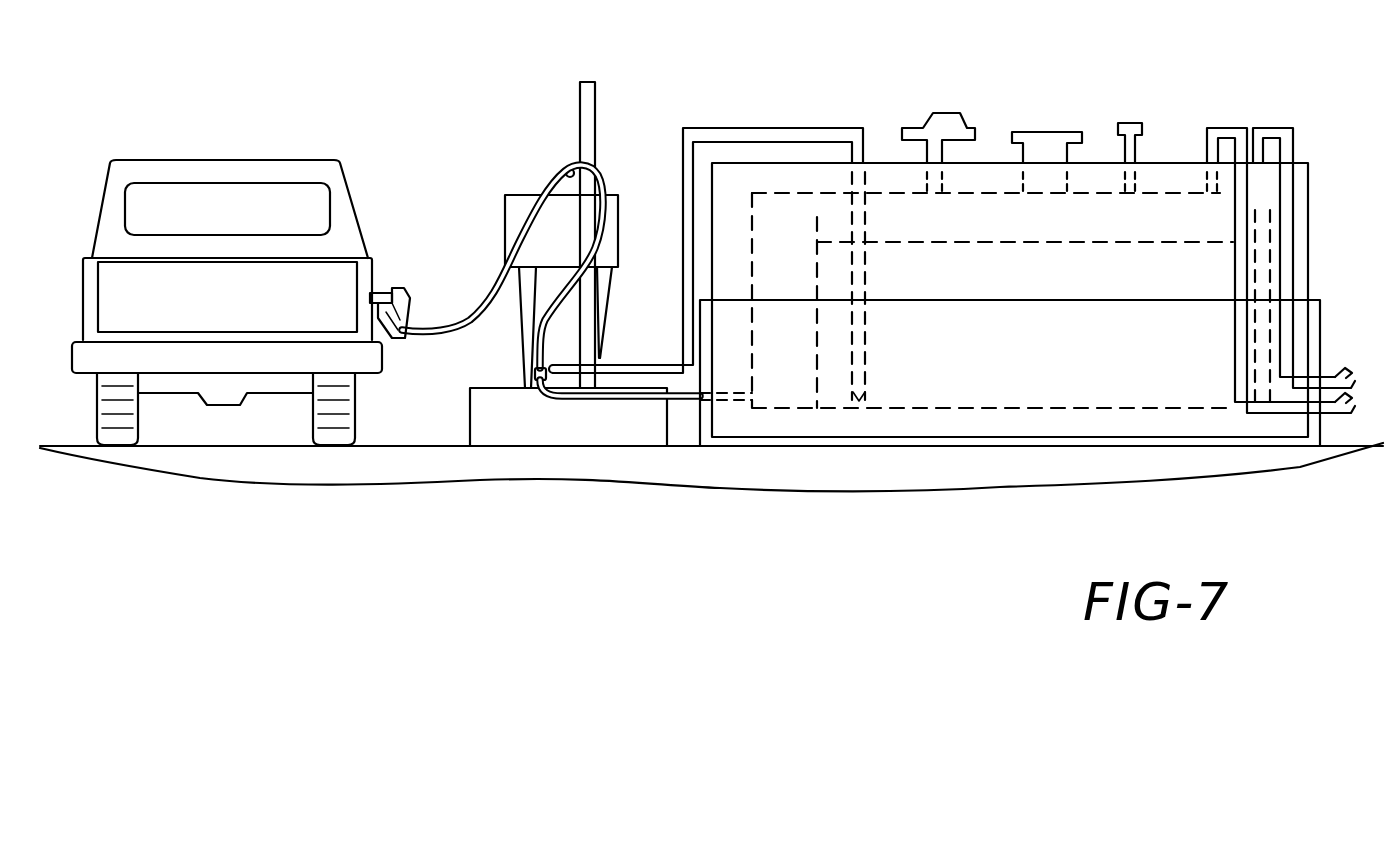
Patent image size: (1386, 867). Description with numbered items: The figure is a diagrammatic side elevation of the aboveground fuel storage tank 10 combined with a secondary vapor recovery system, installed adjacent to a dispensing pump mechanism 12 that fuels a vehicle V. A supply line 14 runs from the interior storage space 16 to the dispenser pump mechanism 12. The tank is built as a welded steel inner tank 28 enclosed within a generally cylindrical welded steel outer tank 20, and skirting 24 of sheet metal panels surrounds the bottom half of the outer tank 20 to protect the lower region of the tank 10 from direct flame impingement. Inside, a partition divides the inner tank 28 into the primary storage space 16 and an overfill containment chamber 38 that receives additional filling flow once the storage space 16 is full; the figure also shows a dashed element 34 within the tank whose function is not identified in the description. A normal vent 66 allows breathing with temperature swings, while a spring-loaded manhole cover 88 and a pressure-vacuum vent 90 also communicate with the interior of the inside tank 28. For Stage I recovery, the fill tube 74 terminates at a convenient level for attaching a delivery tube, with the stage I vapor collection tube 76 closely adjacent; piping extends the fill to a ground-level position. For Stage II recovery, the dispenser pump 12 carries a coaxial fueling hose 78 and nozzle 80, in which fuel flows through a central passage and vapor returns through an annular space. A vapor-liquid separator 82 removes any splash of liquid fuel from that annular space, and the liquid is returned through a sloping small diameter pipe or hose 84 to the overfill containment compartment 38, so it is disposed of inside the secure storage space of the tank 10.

The fuel storage tank 10 is at (868, 278).
The vehicle V is at (343, 161).
The dispensing pump mechanism 12 is at (486, 217).
The supply line 14 is at (745, 83).
The interior storage space 16 is at (990, 264).
The outer tank 20 is at (876, 157).
The skirting 24 is at (958, 392).
The inner tank 28 is at (1097, 190).
The vent conduit 34 is at (815, 218).
The overfill containment chamber 38 is at (780, 274).
The normal vent 66 is at (1145, 122).
The fill tube 74 is at (1290, 285).
The stage I vapor collection tube 76 is at (1248, 218).
The coaxial fueling hose 78 is at (601, 184).
The nozzle 80 is at (398, 290).
The vapor-liquid separator 82 is at (526, 374).
The sloping small diameter pipe or hose 84 is at (677, 395).
The spring-loaded manhole cover 88 is at (1070, 92).
The pressure-vacuum vent 90 is at (948, 112).